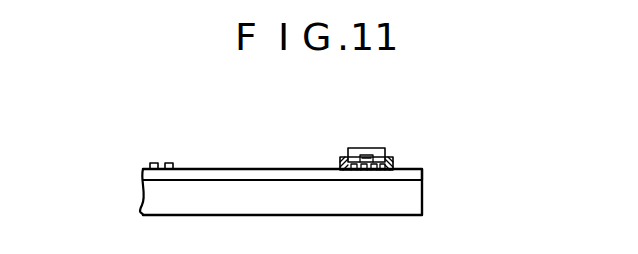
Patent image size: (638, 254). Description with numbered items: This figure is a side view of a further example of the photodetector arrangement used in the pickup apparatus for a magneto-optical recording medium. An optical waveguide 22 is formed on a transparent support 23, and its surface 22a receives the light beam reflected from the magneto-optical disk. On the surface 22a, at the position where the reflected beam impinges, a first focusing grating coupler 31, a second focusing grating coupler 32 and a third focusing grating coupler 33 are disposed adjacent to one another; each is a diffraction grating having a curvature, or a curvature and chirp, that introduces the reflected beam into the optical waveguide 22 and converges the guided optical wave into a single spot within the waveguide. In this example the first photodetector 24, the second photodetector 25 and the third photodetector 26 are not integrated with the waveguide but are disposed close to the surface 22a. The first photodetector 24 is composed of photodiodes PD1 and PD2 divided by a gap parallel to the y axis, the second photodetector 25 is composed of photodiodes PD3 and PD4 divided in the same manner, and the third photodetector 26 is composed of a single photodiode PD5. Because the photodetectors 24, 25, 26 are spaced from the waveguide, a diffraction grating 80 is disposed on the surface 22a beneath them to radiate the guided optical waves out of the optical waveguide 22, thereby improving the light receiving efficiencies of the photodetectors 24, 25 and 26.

The optical waveguide 22 is at (257, 174).
The surface of the optical waveguide 22a is at (412, 170).
The transparent support 23 is at (343, 202).
The first photodetector 24 is at (448, 125).
The second photodetector 25 is at (448, 125).
The third photodetector 26 is at (448, 125).
The photodiode PD1 is at (448, 125).
The photodiode PD2 is at (448, 125).
The photodiode PD3 is at (448, 125).
The photodiode PD4 is at (448, 125).
The photodiode PD5 is at (362, 140).
The first focusing grating coupler 31 is at (196, 136).
The second focusing grating coupler 32 is at (196, 136).
The third focusing grating coupler 33 is at (172, 163).
The diffraction grating 80 is at (378, 158).